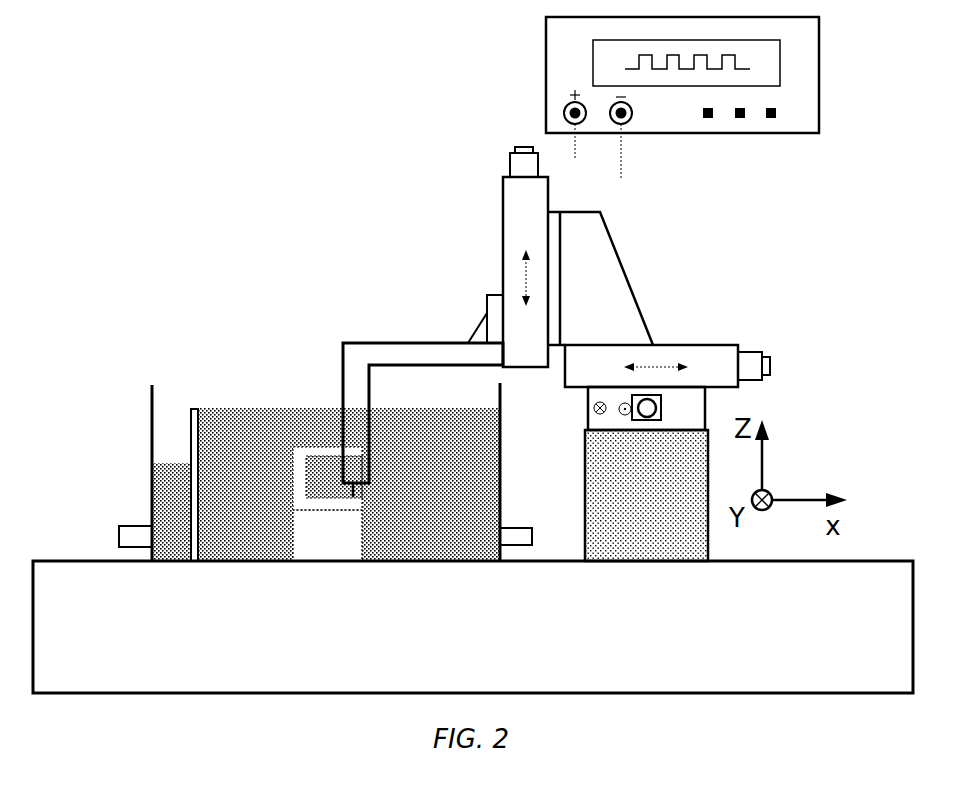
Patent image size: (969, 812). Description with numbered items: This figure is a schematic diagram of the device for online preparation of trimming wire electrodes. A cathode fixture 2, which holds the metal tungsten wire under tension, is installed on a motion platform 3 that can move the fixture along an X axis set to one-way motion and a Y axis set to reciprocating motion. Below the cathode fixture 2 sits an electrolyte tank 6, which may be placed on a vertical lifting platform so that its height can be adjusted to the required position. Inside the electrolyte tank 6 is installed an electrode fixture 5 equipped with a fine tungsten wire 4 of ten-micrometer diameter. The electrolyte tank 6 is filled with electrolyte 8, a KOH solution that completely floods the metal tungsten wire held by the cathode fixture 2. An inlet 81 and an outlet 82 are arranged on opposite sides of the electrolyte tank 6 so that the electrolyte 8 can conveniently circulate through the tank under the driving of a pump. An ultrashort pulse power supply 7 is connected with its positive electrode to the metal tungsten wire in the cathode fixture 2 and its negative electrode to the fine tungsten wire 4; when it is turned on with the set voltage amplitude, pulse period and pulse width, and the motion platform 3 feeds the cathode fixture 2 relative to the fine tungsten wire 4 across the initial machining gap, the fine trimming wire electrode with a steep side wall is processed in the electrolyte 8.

The cathode fixture 2 is at (353, 378).
The motion platform 3 is at (613, 295).
The fine tungsten wire 4 is at (357, 487).
The electrode fixture 5 is at (298, 480).
The electrolyte tank 6 is at (500, 497).
The ultrashort pulse power supply 7 is at (800, 87).
The electrolyte 8 is at (483, 455).
The inlet 81 is at (523, 545).
The outlet 82 is at (128, 523).